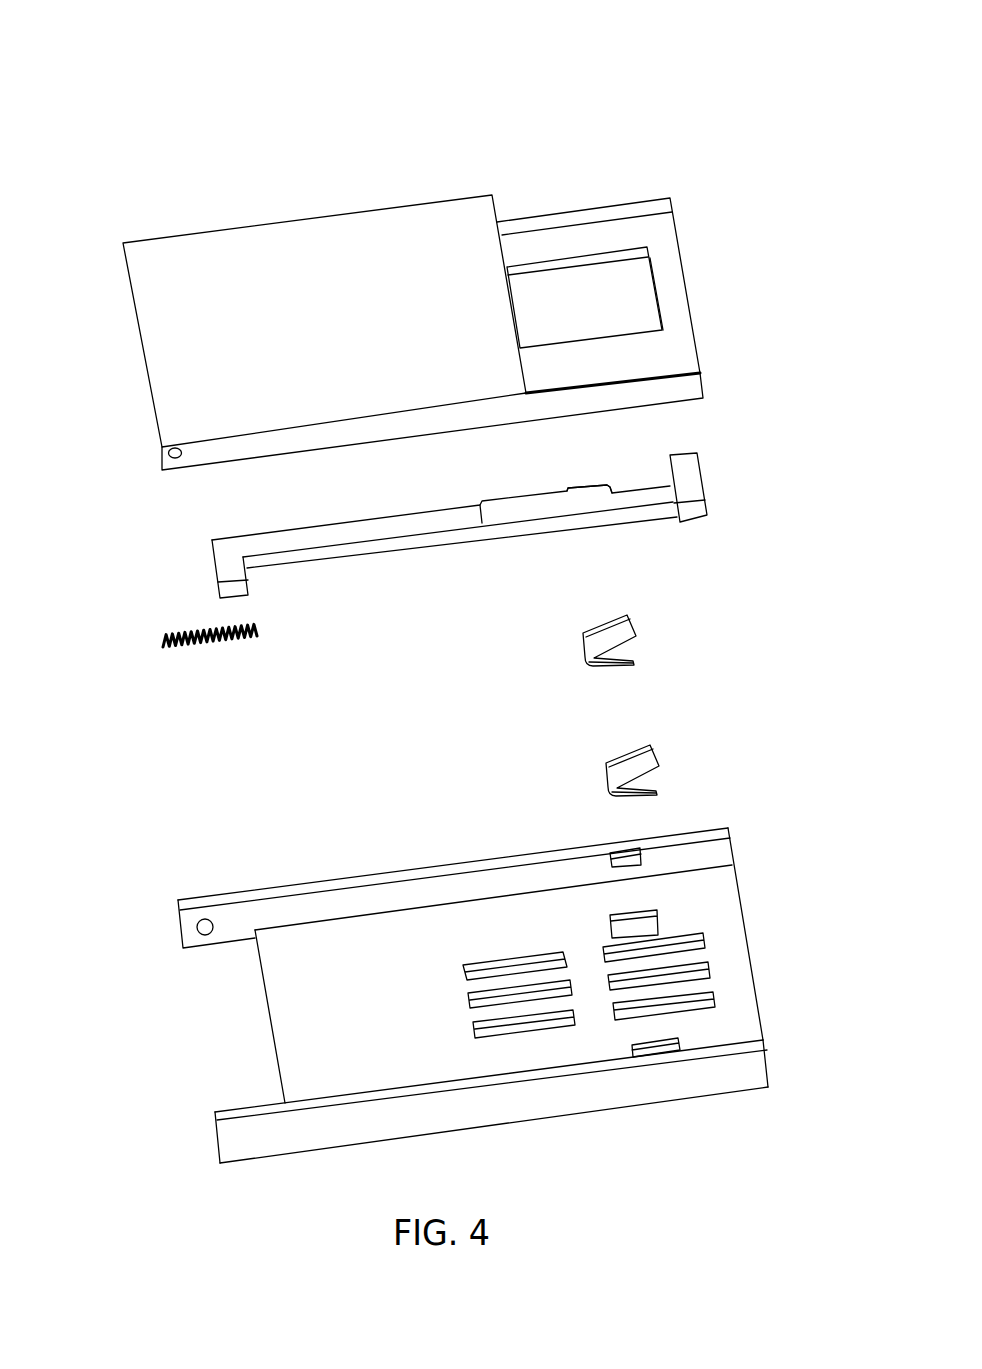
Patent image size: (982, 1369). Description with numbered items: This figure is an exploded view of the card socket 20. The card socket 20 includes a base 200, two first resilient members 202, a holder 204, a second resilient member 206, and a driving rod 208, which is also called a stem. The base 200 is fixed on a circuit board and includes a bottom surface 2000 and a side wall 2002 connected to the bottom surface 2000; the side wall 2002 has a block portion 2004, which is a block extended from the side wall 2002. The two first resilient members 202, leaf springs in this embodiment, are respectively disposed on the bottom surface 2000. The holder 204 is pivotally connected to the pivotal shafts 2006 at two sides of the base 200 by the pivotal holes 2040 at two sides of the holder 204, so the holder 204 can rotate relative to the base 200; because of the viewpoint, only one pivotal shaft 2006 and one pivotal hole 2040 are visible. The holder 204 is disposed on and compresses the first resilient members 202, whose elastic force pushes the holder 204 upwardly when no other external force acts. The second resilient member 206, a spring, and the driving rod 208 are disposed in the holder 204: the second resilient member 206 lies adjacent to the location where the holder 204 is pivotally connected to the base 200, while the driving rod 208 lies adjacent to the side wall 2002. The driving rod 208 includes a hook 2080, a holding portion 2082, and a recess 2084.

The card socket 20 is at (560, 65).
The base 200 is at (456, 977).
The bottom surface 2000 is at (340, 1023).
The side wall 2002 is at (486, 880).
The block portion 2004 is at (641, 855).
The pivotal shaft 2006 is at (197, 928).
The first resilient member 202 is at (636, 650).
The holder 204 is at (412, 337).
The pivotal hole 2040 is at (158, 461).
The second resilient member 206 is at (258, 633).
The driving rod 208 is at (454, 531).
The hook 2080 is at (212, 582).
The holding portion 2082 is at (708, 495).
The recess 2084 is at (643, 483).